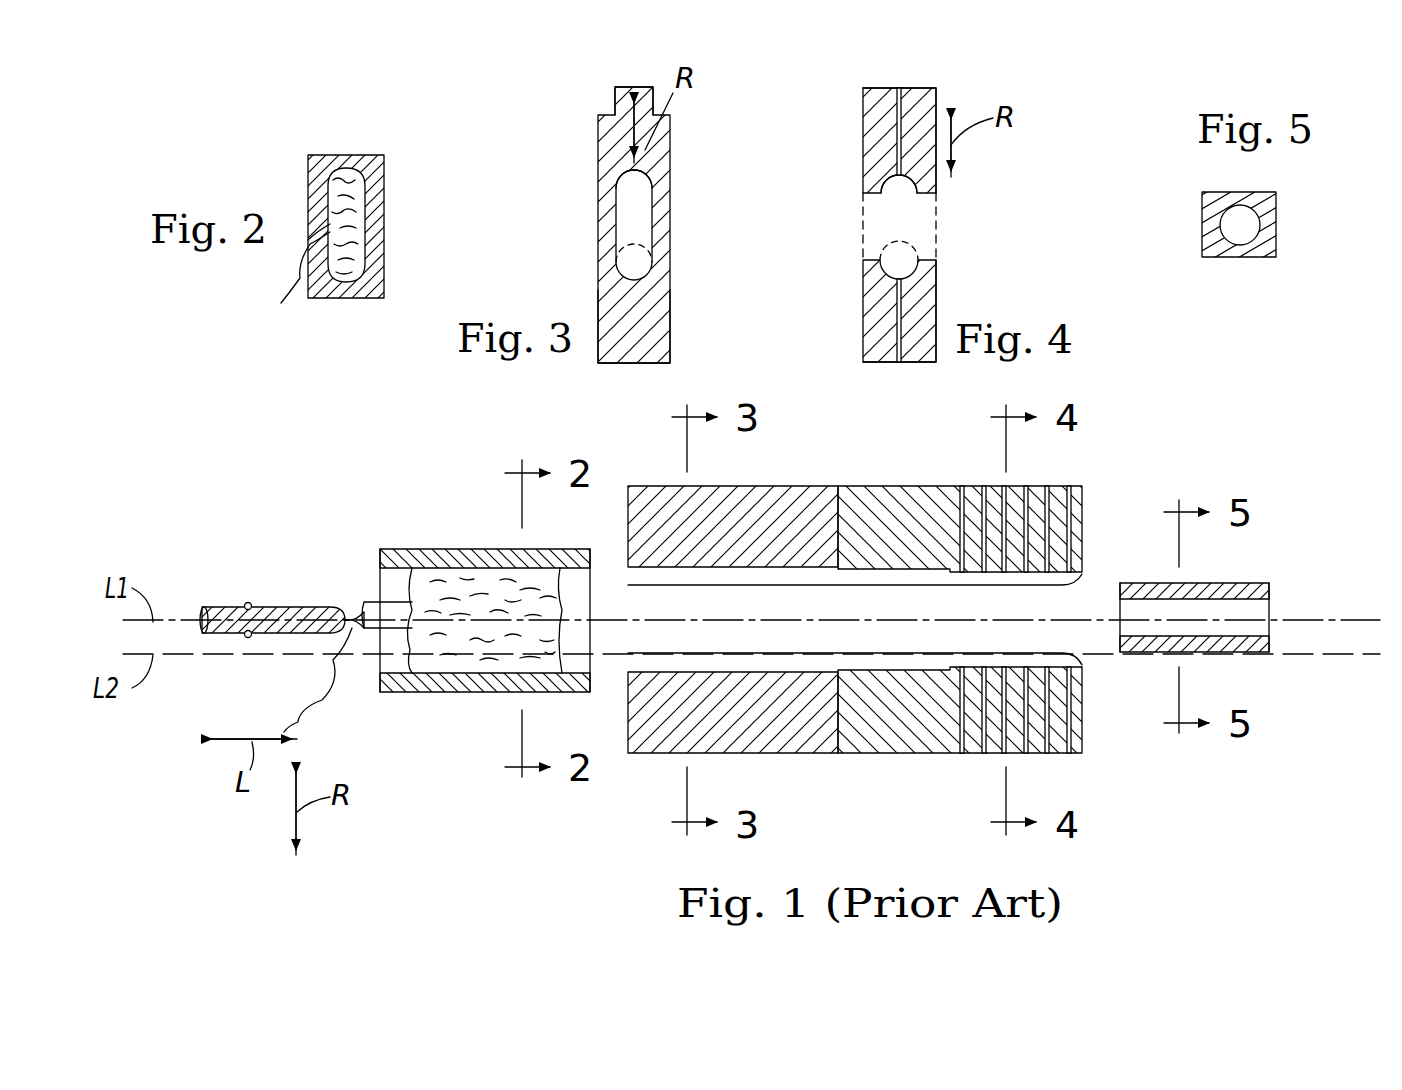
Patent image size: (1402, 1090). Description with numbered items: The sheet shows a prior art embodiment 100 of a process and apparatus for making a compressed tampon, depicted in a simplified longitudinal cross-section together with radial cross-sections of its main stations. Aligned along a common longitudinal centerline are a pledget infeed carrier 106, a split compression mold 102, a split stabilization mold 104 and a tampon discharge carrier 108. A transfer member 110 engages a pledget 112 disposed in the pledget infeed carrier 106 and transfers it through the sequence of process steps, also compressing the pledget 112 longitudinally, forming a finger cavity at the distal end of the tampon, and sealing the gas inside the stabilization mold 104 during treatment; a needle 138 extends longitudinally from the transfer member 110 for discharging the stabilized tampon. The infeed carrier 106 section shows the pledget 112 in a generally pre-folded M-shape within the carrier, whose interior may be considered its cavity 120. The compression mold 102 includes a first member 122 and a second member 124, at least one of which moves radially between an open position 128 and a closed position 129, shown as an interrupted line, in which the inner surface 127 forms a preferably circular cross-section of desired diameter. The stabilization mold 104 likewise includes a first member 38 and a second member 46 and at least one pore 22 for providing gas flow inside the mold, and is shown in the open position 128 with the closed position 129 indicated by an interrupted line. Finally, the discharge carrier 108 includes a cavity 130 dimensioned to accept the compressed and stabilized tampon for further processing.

In FIG. 1, the prior art embodiment 100 is at (316, 452).
In FIG. 1, the compression mold 102 is at (645, 735).
In FIG. 3, the compression mold 102 is at (608, 158).
In FIG. 1, the stabilization mold 104 is at (872, 735).
In FIG. 4, the stabilization mold 104 is at (926, 172).
In FIG. 1, the pledget infeed carrier 106 is at (460, 548).
In FIG. 2, the pledget infeed carrier 106 is at (308, 190).
In FIG. 1, the tampon discharge carrier 108 is at (1253, 583).
In FIG. 5, the tampon discharge carrier 108 is at (1220, 258).
In FIG. 1, the transfer member 110 is at (272, 606).
In FIG. 1, the pledget 112 is at (440, 660).
In FIG. 2, the pledget 112 is at (357, 267).
In FIG. 2, the cavity 120 is at (363, 172).
In FIG. 3, the first member 122 is at (634, 87).
In FIG. 3, the second member 124 is at (645, 323).
In FIG. 3, the inner surface 127 is at (633, 173).
In FIG. 3, the open position 128 is at (653, 178).
In FIG. 4, the open position 128 is at (880, 176).
In FIG. 3, the closed position 129 is at (648, 245).
In FIG. 4, the closed position 129 is at (916, 248).
In FIG. 5, the cavity 130 is at (1250, 258).
In FIG. 1, the needle 138 is at (354, 620).
In FIG. 1, the pore 22 is at (985, 750).
In FIG. 4, the pore 22 is at (899, 88).
In FIG. 4, the first member 38 is at (921, 342).
In FIG. 4, the second member 46 is at (930, 105).